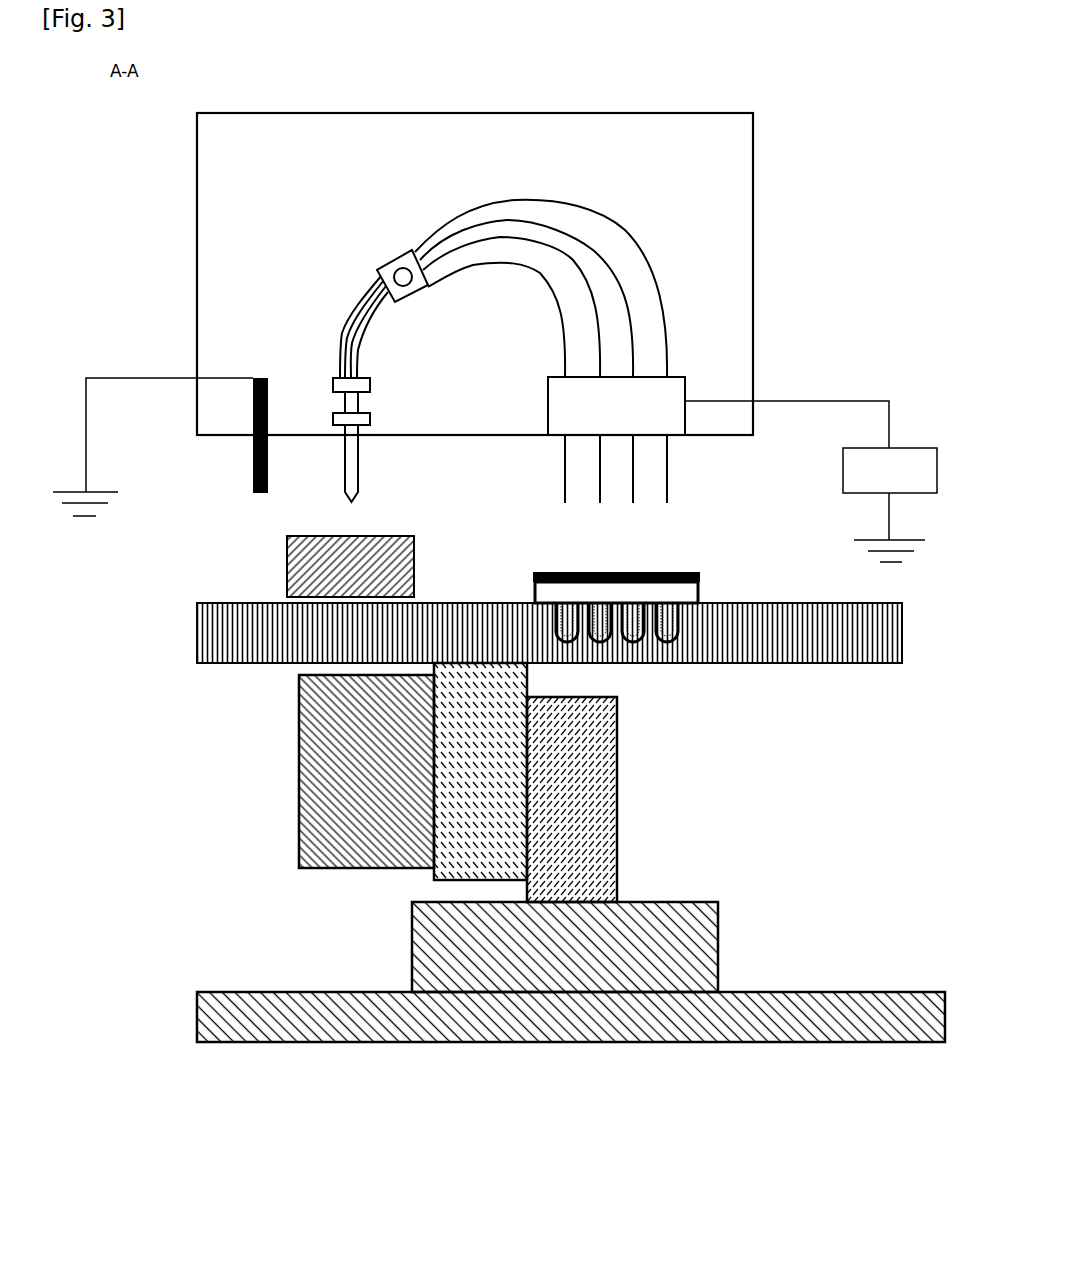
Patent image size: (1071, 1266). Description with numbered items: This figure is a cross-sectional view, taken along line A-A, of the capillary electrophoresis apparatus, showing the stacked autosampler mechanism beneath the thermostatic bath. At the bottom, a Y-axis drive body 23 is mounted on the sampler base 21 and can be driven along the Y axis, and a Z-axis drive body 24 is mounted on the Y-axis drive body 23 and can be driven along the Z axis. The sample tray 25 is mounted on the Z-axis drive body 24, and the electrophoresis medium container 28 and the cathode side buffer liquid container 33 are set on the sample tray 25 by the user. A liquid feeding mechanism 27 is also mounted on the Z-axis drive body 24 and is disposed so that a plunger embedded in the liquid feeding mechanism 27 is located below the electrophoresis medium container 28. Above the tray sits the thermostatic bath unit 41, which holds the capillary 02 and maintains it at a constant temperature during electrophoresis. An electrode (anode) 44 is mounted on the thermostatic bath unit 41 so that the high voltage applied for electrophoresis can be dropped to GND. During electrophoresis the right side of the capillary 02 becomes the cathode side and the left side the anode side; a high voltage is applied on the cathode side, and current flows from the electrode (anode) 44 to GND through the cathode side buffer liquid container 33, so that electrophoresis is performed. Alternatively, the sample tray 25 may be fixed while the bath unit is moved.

The thermostatic bath unit 41 is at (719, 220).
The capillary 02 is at (661, 320).
The electrode (anode) 44 is at (253, 378).
The electrophoresis medium container 28 is at (287, 578).
The sample tray 25 is at (787, 640).
The cathode side buffer liquid container 33 is at (700, 579).
The liquid feeding mechanism 27 is at (310, 827).
The Z-axis drive body 24 is at (433, 883).
The Y-axis drive body 23 is at (617, 807).
The sampler base 21 is at (610, 1023).